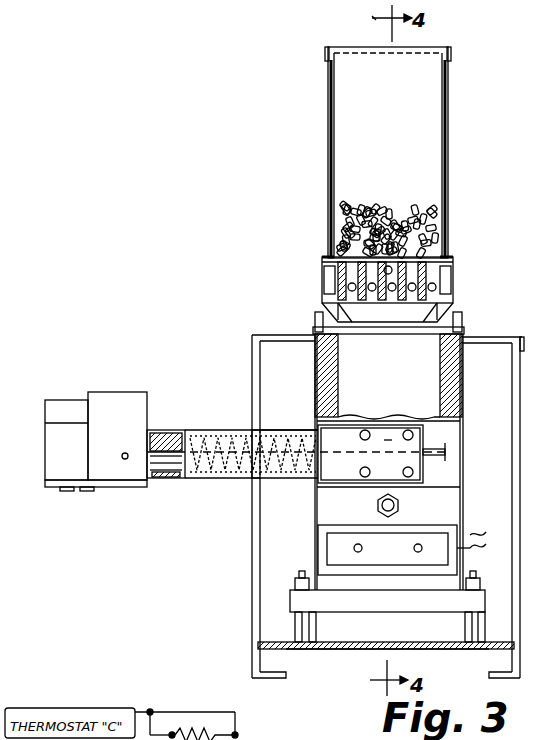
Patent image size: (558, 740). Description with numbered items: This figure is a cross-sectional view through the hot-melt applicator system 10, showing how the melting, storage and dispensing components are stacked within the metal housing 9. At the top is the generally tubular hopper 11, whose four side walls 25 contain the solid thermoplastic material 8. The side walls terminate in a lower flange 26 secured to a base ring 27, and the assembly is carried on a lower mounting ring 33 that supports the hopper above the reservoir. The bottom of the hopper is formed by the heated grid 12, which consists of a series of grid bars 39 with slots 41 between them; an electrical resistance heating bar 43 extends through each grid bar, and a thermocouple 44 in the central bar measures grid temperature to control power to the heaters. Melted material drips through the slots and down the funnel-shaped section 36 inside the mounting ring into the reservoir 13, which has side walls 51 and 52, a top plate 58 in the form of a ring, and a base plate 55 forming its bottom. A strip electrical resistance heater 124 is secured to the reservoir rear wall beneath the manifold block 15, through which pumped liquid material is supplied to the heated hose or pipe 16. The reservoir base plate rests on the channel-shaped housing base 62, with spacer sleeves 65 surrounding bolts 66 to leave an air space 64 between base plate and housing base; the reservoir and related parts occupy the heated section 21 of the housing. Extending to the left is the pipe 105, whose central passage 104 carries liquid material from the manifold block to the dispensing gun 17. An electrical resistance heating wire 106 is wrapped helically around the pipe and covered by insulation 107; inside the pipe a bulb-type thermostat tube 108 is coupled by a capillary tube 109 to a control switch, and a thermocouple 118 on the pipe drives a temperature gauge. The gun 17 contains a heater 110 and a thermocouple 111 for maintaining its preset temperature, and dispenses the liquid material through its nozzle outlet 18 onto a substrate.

The applicator system 10 is at (212, 283).
The hopper 11 is at (452, 130).
The side walls 25 is at (328, 126).
The solid thermoplastic material 8 is at (382, 203).
The heated grid 12 is at (458, 285).
The grid bars 39 is at (322, 278).
The thermocouple 44 is at (453, 268).
The base ring 27 is at (322, 258).
The lower flange 26 is at (452, 258).
The funnel-shaped section 36 is at (386, 318).
The slots 41 is at (356, 305).
The heating bar 43 is at (423, 305).
The top plate 58 is at (315, 330).
The lower mounting ring 33 is at (470, 316).
The housing 9 is at (524, 362).
The reservoir 13 is at (463, 391).
The side wall 52 is at (316, 360).
The side wall 51 is at (462, 365).
The manifold block 15 is at (432, 469).
The capillary tube 109 is at (388, 440).
The strip electrical resistance heater 124 is at (412, 548).
The base plate 55 is at (482, 600).
The bolts 66 is at (474, 578).
The spacer sleeves 65 is at (300, 624).
The housing base 62 is at (335, 650).
The air space 64 is at (412, 624).
The heated section 21 is at (290, 540).
The central passage 104 is at (198, 431).
The pipe 105 is at (214, 436).
The heated hose or pipe 16 is at (240, 488).
The electrical resistance heating wire 106 is at (270, 428).
The insulation 107 is at (162, 430).
The thermostat tube 108 is at (168, 478).
The thermocouple 118 is at (165, 430).
The dispensing gun 17 is at (112, 406).
The heater 110 is at (126, 452).
The thermocouple 111 is at (86, 488).
The nozzle outlet 18 is at (62, 492).